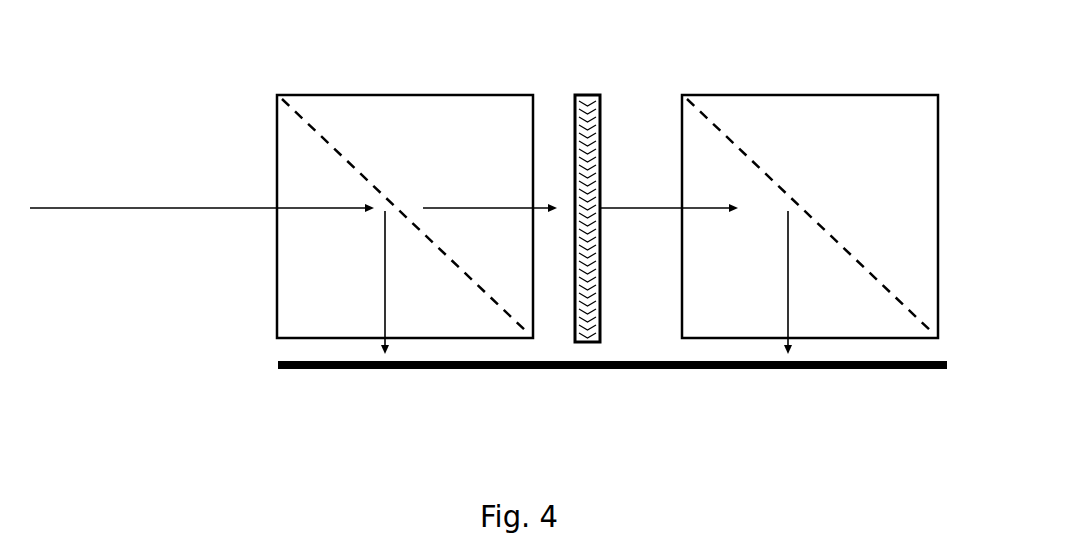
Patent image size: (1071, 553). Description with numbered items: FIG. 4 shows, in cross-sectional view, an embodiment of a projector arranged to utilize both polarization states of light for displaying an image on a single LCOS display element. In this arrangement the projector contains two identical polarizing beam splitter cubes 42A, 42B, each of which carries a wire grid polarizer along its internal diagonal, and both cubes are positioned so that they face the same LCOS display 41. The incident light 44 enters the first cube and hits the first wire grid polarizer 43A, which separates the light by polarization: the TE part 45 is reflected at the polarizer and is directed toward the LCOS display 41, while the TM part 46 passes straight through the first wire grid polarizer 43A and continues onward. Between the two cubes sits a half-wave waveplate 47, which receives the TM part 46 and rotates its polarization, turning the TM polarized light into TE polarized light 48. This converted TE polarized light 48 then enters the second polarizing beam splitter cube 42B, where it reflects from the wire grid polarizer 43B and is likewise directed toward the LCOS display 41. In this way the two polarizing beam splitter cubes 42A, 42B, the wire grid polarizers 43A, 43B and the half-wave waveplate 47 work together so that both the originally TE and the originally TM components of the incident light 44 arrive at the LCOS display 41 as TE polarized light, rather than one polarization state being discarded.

The LCOS display 41 is at (560, 371).
The polarizing beam splitter cube 42A is at (410, 93).
The polarizing beam splitter cube 42B is at (828, 93).
The first wire grid polarizer 43A is at (333, 137).
The wire grid polarizer 43B is at (740, 137).
The incident light 44 is at (157, 217).
The TE part 45 is at (385, 270).
The TM part 46 is at (452, 200).
The λ/2 waveplate 47 is at (587, 90).
The TE polarized light 48 is at (653, 200).